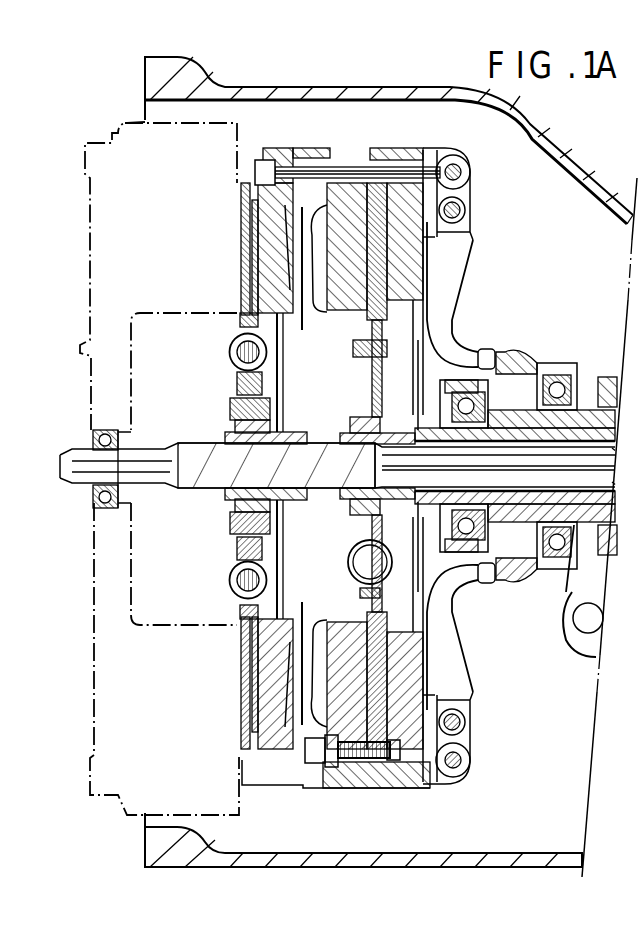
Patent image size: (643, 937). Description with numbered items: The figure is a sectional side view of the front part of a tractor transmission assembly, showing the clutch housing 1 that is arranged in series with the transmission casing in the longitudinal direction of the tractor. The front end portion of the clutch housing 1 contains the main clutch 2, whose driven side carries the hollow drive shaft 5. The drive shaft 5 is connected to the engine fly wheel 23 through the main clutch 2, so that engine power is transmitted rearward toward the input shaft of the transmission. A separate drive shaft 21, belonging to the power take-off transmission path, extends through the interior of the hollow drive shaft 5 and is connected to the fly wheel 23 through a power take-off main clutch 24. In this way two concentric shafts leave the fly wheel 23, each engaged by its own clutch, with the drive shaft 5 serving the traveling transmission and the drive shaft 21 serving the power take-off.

The clutch housing 1 is at (588, 176).
The main clutch 2 is at (384, 143).
The drive shaft 5 is at (573, 398).
The drive shaft 21 is at (517, 453).
The engine fly wheel 23 is at (190, 131).
The power take-off main clutch 24 is at (284, 145).